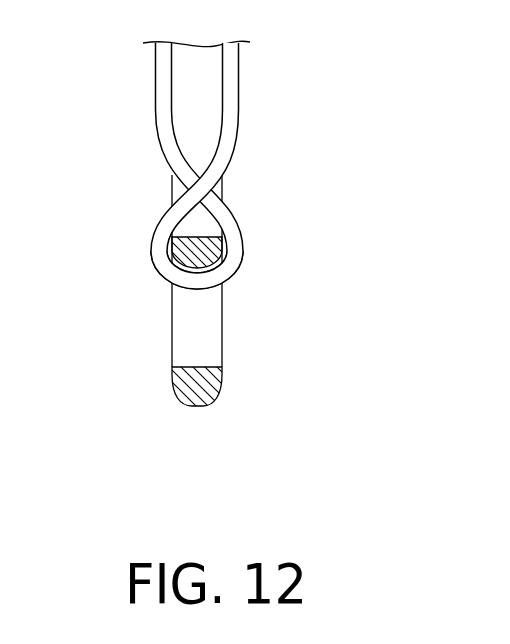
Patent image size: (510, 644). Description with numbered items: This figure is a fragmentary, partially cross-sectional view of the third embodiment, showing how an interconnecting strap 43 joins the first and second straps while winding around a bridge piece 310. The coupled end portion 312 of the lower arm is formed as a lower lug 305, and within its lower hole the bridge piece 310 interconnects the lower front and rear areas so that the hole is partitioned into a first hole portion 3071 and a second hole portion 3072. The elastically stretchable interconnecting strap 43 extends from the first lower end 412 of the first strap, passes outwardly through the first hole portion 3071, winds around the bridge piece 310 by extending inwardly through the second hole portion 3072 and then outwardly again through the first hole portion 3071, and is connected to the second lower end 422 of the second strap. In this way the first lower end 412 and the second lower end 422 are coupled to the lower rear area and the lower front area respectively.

The first hole portion 3071 is at (219, 74).
The second hole portion 3072 is at (214, 337).
The first lower end 412 is at (170, 105).
The second lower end 422 is at (230, 108).
The interconnecting strap 43 is at (197, 280).
The bridge piece 310 is at (207, 247).
The coupled end portion 312 is at (260, 417).
The lower lug 305 is at (224, 393).